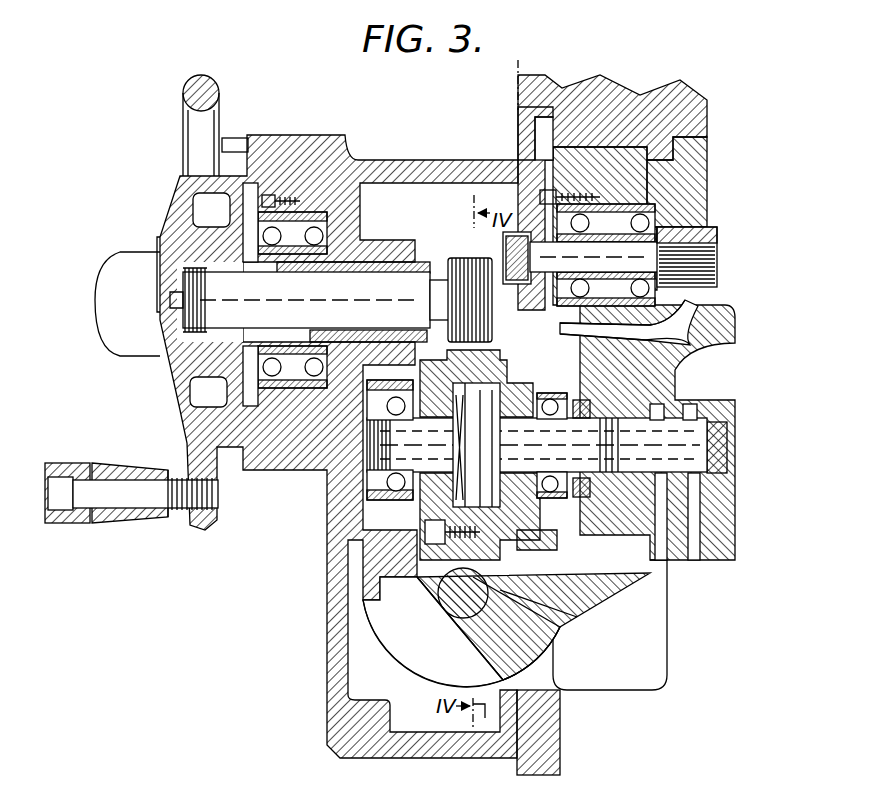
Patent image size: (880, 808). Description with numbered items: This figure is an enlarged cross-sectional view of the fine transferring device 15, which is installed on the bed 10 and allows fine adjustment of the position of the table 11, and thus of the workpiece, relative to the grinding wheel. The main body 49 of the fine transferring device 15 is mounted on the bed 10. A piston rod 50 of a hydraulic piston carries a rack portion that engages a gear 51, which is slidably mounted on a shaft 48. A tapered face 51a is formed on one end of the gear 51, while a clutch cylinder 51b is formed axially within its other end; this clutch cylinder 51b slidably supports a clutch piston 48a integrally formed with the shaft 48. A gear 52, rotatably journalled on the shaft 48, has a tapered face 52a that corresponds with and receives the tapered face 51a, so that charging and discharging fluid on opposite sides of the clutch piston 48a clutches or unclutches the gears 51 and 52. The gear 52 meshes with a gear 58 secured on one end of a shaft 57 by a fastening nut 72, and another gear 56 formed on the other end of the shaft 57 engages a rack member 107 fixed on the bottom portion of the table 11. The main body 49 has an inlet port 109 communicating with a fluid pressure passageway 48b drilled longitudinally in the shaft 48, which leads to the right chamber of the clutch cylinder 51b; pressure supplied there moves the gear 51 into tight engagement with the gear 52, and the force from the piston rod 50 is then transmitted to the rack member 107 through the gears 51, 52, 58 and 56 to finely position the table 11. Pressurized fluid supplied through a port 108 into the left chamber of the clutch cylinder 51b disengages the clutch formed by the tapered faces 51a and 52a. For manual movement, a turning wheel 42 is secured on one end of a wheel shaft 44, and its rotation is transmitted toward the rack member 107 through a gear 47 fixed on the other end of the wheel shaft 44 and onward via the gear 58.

The bed 10 is at (535, 718).
The table 11 is at (520, 92).
The fine transferring device 15 is at (412, 135).
The turning wheel 42 is at (186, 93).
The wheel shaft 44 is at (378, 290).
The gear 47 is at (462, 278).
The shaft 48 is at (725, 463).
The clutch piston 48a is at (477, 488).
The fluid pressure passageway 48b is at (688, 405).
The main body 49 is at (405, 643).
The piston rod 50 is at (485, 560).
The gear 51 is at (505, 682).
The tapered face 51a is at (578, 335).
The clutch cylinder 51b is at (400, 447).
The gear 52 is at (535, 560).
The tapered face 52a is at (515, 607).
The gear 56 is at (700, 262).
The shaft 57 is at (597, 250).
The gear 58 is at (525, 150).
The fastening nut 72 is at (512, 240).
The rack member 107 is at (688, 165).
The port 108 is at (690, 500).
The inlet port 109 is at (660, 530).